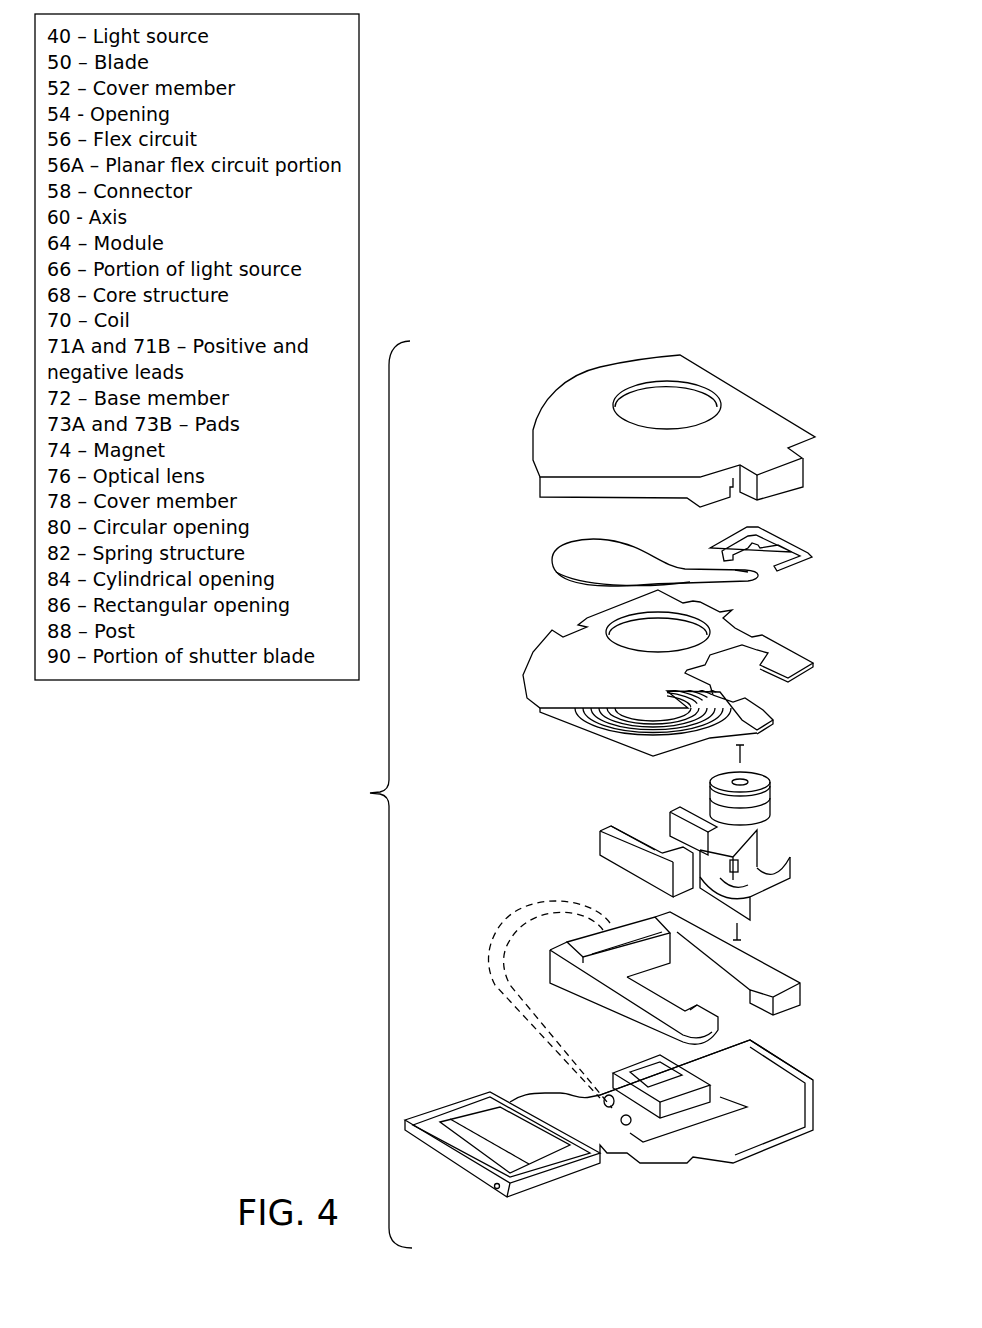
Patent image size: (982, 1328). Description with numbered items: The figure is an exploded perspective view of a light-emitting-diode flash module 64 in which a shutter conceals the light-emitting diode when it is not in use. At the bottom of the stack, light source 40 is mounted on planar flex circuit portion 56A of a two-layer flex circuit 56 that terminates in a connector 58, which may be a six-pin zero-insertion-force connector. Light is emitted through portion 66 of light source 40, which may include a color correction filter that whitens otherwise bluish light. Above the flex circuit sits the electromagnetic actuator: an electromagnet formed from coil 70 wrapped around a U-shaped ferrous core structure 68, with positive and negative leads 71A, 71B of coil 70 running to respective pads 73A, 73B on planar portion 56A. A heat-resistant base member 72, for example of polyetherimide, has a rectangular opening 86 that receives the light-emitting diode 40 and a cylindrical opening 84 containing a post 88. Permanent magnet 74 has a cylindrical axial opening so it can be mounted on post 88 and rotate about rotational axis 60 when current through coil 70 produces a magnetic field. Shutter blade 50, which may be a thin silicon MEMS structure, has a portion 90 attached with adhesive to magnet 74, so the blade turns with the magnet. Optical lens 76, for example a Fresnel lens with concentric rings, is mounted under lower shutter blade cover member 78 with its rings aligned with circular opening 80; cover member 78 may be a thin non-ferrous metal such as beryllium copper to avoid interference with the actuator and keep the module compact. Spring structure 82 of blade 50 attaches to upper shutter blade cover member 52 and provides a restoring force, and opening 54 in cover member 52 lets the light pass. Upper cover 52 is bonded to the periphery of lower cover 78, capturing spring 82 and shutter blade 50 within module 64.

The light source 40 is at (692, 1057).
The shutter blade 50 is at (580, 560).
The upper shutter blade cover member 52 is at (767, 400).
The opening 54 is at (688, 390).
The flex circuit 56 is at (665, 1170).
The planar flex circuit portion 56A is at (598, 1095).
The connector 58 is at (517, 1190).
The rotational axis 60 is at (740, 752).
The module 64 is at (377, 794).
The portion of light source 66 is at (648, 1070).
The core structure 68 is at (790, 987).
The electromagnetic coil 70 is at (622, 933).
The positive lead 71A is at (492, 948).
The negative lead 71B is at (517, 993).
The base member 72 is at (682, 873).
The pad 73A is at (628, 1127).
The pad 73B is at (607, 1077).
The permanent magnet 74 is at (722, 806).
The optical lens 76 is at (630, 728).
The lower shutter blade cover member 78 is at (582, 620).
The circular opening 80 is at (713, 612).
The spring structure 82 is at (797, 571).
The cylindrical opening 84 is at (760, 853).
The rectangular opening 86 is at (642, 832).
The post 88 is at (747, 888).
The portion of shutter blade 90 is at (760, 580).